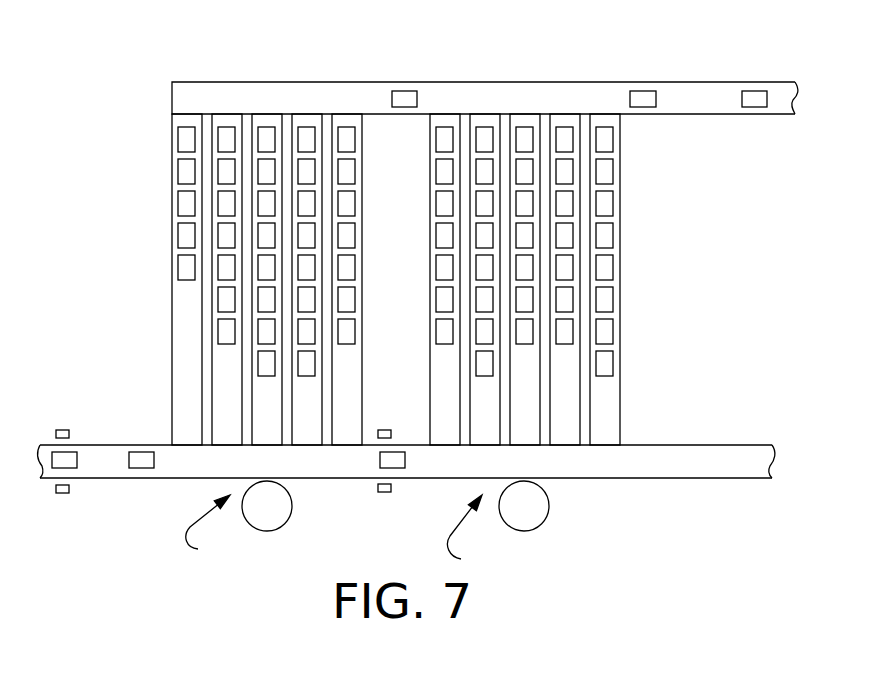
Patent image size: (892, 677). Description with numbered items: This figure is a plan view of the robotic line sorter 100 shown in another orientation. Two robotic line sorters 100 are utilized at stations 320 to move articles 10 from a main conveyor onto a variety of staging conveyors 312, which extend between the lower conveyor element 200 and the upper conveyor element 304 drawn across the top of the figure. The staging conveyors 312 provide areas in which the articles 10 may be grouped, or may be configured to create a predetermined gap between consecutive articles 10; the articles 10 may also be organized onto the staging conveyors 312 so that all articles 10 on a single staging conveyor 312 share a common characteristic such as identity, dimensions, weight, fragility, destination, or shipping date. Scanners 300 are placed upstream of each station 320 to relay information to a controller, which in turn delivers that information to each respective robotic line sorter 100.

The article 10 is at (178, 138).
The robotic line sorter 100 is at (279, 528).
The lower carrier frame 200 is at (99, 478).
The scanner 300 is at (63, 430).
The upper carrier frame 304 is at (617, 82).
The staging conveyor 312 is at (172, 235).
The station 320 is at (348, 534).